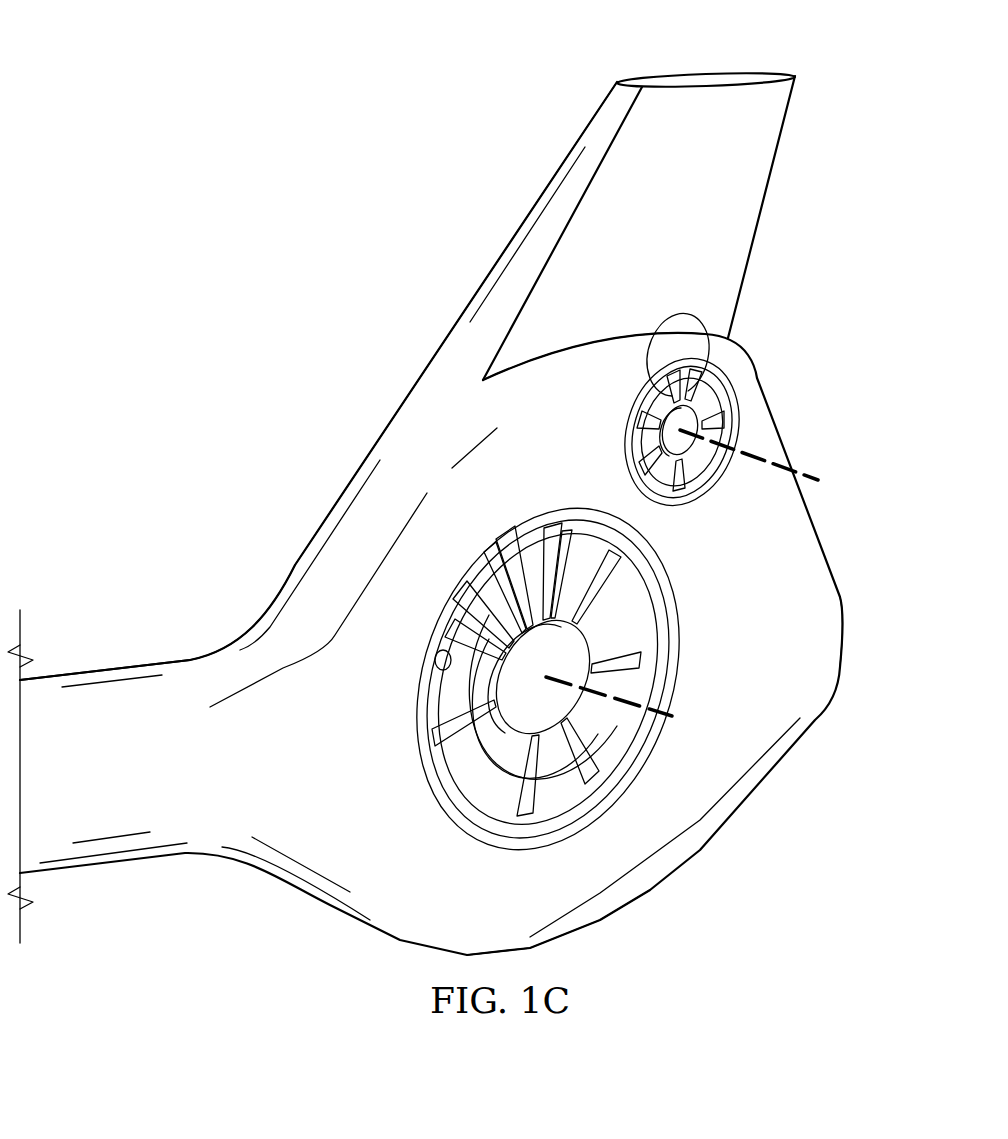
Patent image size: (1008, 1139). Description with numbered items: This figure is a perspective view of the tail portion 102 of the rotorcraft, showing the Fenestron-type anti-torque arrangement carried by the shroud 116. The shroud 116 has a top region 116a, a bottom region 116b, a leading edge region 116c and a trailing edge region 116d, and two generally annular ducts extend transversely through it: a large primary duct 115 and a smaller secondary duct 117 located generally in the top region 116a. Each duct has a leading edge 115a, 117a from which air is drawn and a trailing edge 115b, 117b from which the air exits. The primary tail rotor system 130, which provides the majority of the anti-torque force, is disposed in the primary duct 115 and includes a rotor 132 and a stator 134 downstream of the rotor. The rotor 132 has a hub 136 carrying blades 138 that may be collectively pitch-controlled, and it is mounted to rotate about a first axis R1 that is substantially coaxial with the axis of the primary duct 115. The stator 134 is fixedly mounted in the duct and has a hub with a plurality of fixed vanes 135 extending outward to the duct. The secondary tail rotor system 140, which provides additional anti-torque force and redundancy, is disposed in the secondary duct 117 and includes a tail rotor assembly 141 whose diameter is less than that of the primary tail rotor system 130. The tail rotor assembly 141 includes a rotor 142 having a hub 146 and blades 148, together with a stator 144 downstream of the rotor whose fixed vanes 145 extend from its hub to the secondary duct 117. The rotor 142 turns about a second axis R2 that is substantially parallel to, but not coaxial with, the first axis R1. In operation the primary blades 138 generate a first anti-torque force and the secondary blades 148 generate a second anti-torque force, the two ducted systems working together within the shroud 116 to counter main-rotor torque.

The tail portion 102 is at (130, 660).
The primary duct 115 is at (530, 855).
The leading edge of primary duct 115a is at (685, 655).
The trailing edge of primary duct 115b is at (490, 560).
The shroud 116 is at (385, 425).
The top region 116a is at (618, 340).
The bottom region 116b is at (655, 890).
The leading edge region 116c is at (290, 590).
The trailing edge region 116d is at (840, 640).
The secondary duct 117 is at (758, 380).
The leading edge of secondary duct 117a is at (740, 430).
The trailing edge of secondary duct 117b is at (652, 376).
The primary tail rotor system 130 is at (562, 682).
The rotor 132 is at (610, 784).
The stator 134 is at (440, 690).
The fixed vanes 135 is at (540, 530).
The hub 136 is at (615, 745).
The blades 138 is at (445, 720).
The secondary tail rotor system 140 is at (699, 405).
The tail rotor assembly 141 is at (655, 322).
The rotor 142 is at (780, 505).
The stator 144 is at (625, 420).
The fixed vanes 145 is at (640, 400).
The hub 146 is at (485, 750).
The blades 148 is at (730, 370).
The first axis R1 is at (698, 706).
The second axis R2 is at (767, 465).